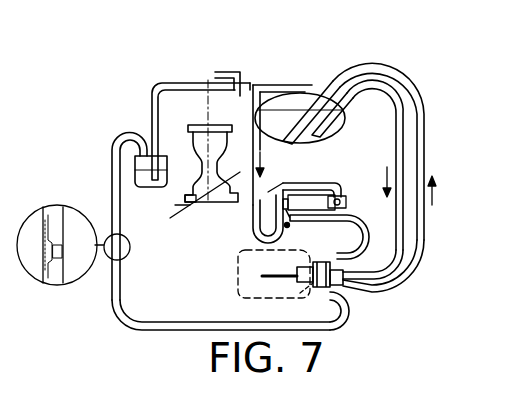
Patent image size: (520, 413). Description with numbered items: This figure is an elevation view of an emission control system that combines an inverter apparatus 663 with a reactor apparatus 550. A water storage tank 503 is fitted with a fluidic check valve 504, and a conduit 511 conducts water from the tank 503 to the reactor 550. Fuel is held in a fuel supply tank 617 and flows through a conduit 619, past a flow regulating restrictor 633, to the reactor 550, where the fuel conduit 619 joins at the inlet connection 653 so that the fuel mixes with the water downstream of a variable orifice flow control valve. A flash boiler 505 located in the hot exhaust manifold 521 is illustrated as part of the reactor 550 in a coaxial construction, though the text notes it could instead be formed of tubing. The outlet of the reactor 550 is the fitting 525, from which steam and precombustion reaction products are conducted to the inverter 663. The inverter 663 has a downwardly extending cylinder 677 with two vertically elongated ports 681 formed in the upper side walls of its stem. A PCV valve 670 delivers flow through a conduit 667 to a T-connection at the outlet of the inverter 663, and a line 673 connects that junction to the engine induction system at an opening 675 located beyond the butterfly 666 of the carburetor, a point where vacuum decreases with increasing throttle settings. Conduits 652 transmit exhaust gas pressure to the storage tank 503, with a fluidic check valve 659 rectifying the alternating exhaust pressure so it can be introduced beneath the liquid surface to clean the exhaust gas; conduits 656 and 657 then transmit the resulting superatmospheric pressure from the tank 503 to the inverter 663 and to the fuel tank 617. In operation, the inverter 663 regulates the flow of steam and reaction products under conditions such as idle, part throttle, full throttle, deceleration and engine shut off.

The fluidic check valve 504 is at (218, 72).
The conduit 657 is at (152, 90).
The fluidic check valve 659 is at (301, 95).
The conduit 652 is at (395, 79).
The conduit 511 is at (398, 97).
The water storage tank 503 is at (343, 128).
The conduit 619 is at (112, 165).
The flow regulating restrictor 633 is at (64, 258).
The fuel supply tank 617 is at (150, 190).
The carburetor butterfly valve 666 is at (196, 192).
The inverter apparatus 663 is at (252, 197).
The opening 675 is at (175, 207).
The conduit 656 is at (253, 226).
The hose 673 is at (268, 192).
The conduit 667 is at (318, 184).
The PCV valve 670 is at (346, 204).
The vertically elongated ports 681 is at (288, 204).
The downwardly extending cylinder 677 is at (290, 226).
The fitting 525 is at (352, 255).
The hot exhaust manifold 521 is at (238, 268).
The flash boiler 505 is at (252, 282).
The reactor apparatus 550 is at (280, 300).
The inlet connection 653 is at (316, 293).